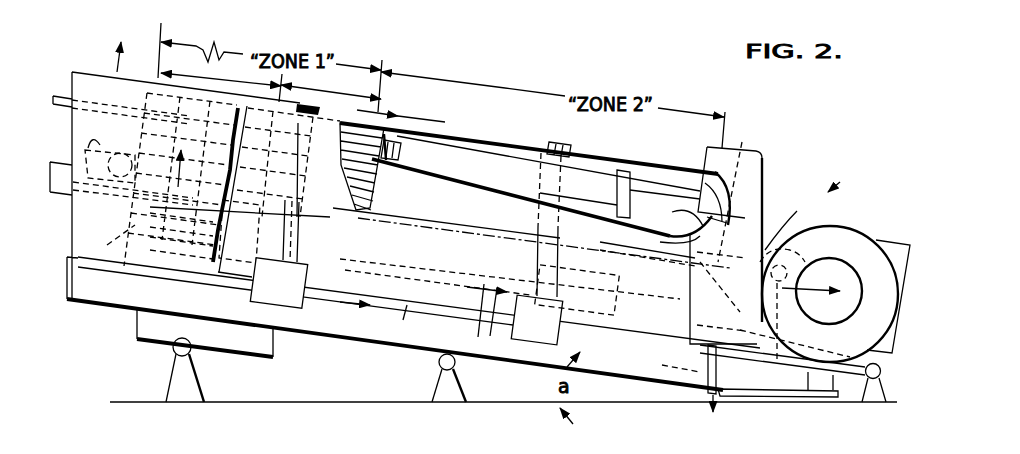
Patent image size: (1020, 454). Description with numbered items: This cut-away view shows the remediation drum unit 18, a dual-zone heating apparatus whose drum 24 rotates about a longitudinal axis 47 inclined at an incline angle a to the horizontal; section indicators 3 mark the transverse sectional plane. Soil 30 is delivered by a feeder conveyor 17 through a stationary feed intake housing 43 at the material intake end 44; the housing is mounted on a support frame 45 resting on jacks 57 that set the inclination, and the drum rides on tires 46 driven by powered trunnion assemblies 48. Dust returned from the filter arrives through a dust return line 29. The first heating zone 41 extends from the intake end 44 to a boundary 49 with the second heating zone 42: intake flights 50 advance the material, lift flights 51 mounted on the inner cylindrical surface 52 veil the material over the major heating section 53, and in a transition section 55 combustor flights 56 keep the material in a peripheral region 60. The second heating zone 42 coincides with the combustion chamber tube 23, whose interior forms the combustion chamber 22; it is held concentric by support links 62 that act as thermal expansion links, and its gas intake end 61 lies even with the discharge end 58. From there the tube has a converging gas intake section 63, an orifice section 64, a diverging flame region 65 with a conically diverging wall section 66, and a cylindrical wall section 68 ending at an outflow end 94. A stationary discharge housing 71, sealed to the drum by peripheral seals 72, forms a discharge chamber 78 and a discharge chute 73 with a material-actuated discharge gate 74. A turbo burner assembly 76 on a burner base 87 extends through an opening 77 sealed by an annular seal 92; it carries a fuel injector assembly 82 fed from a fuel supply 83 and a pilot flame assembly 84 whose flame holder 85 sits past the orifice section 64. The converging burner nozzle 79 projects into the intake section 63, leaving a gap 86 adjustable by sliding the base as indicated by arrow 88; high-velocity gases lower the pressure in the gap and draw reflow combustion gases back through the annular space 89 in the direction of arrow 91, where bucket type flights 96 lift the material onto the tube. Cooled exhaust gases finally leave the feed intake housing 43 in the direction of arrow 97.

The section line 3 is at (359, 182).
The feeder conveyor 17 is at (62, 160).
The remediation drum unit 18 is at (458, 130).
The combustion chamber 22 is at (640, 192).
The combustion chamber tube 23 is at (463, 175).
The drum 24 is at (512, 140).
The dust return line 29 is at (880, 400).
The solid material 30 is at (93, 187).
The first heating zone 41 is at (237, 43).
The second heating zone 42 is at (507, 92).
The feed intake housing 43 is at (71, 238).
The material intake end 44 is at (150, 99).
The support frame 45 is at (320, 340).
The tires 46 is at (578, 139).
The longitudinal axis 47 is at (400, 222).
The powered trunnion assemblies 48 is at (270, 300).
The boundary 49 is at (372, 87).
The intake flights 50 is at (207, 99).
The lift flights 51 is at (193, 282).
The inner cylindrical surface 52 is at (88, 278).
The major heating section 53 is at (218, 57).
The transition section 55 is at (321, 79).
The combustor flights 56 is at (386, 146).
The jacks 57 is at (174, 378).
The discharge end 58 is at (734, 190).
The peripheral region 60 is at (322, 303).
The gas intake end 61 is at (700, 170).
The support links 62 is at (634, 170).
The converging gas intake section 63 is at (658, 287).
The orifice section 64 is at (660, 242).
The diverging flame region 65 is at (560, 216).
The conically diverging wall section 66 is at (498, 192).
The cylindrical wall section 68 is at (386, 167).
The discharge housing 71 is at (765, 172).
The peripheral seals 72 is at (165, 92).
The discharge chute 73 is at (696, 396).
The discharge gate 74 is at (668, 366).
The burner assembly 76 is at (846, 175).
The opening 77 is at (786, 231).
The discharge chamber 78 is at (762, 146).
The converging burner nozzle 79 is at (726, 203).
The fuel injector assembly 82 is at (786, 243).
The fuel supply 83 is at (897, 238).
The pilot flame assembly 84 is at (723, 289).
The flame holder 85 is at (577, 290).
The gap 86 is at (675, 213).
The burner base 87 is at (815, 395).
The arrow 88 is at (811, 272).
The annular space 89 is at (471, 315).
The arrow 91 is at (488, 318).
The annular seal 92 is at (766, 224).
The outflow end 94 is at (363, 224).
The bucket type flights 96 is at (402, 322).
The arrow 97 is at (115, 60).